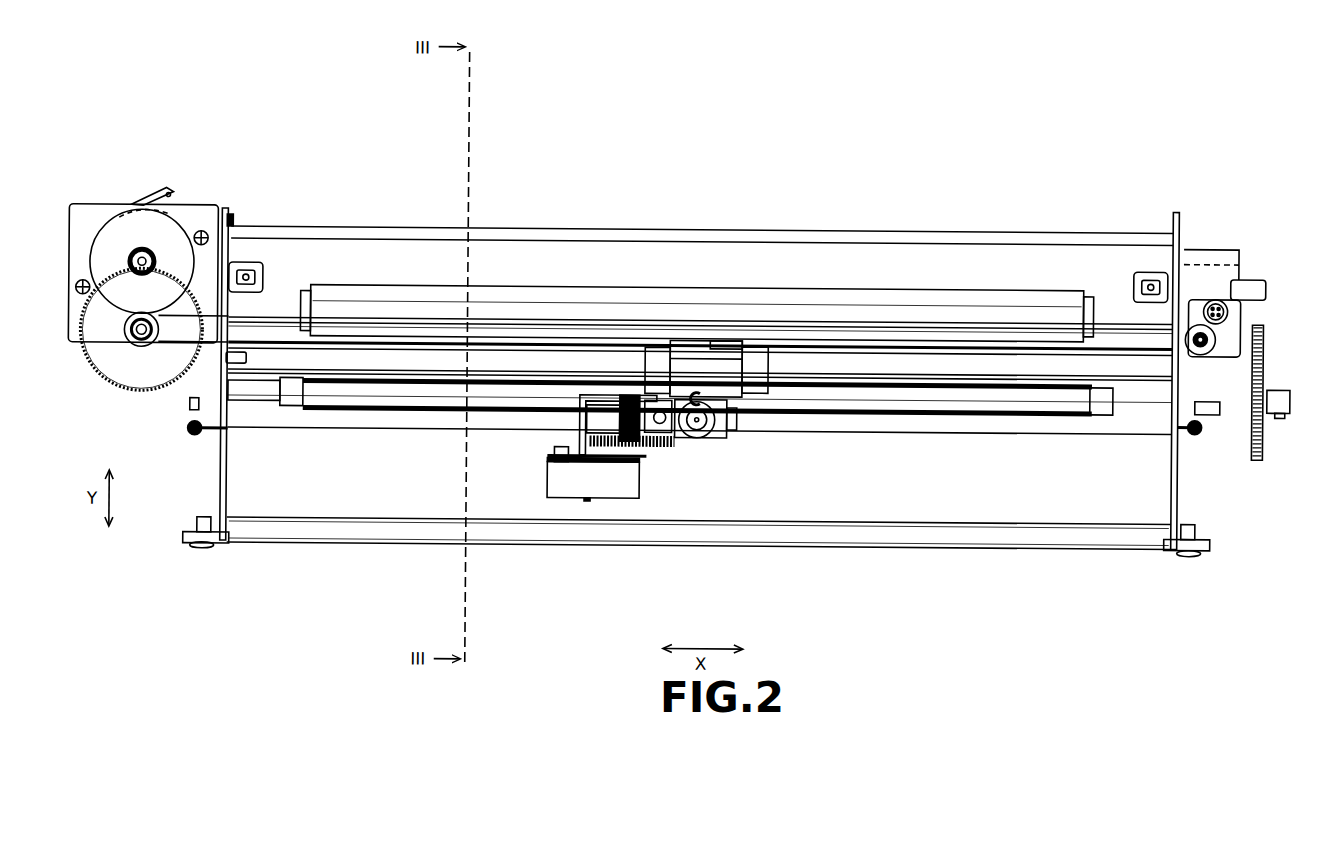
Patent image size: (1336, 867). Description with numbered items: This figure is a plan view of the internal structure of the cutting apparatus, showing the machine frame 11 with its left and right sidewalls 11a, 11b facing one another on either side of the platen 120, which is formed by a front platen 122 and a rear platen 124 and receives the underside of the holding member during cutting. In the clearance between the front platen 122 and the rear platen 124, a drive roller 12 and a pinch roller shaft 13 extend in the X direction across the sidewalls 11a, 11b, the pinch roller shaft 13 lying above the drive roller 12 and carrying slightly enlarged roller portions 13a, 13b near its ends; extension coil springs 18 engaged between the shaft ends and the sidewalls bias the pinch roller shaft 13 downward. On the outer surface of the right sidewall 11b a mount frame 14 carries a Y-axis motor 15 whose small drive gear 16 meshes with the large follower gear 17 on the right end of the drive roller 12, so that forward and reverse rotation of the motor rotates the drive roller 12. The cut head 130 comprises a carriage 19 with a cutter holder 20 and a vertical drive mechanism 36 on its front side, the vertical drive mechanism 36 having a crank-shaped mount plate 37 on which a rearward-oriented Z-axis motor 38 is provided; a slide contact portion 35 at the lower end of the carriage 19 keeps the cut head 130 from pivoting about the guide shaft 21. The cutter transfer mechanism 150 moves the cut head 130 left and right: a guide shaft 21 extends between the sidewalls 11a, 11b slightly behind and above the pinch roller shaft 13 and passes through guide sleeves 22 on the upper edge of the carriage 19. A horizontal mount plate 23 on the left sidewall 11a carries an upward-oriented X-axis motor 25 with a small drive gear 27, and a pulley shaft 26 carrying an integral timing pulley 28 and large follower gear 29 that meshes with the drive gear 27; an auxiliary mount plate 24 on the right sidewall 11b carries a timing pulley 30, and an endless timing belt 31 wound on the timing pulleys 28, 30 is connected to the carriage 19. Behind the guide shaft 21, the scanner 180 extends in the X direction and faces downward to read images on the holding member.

The machine frame 11 is at (1105, 545).
The left sidewall 11a is at (222, 487).
The right sidewall 11b is at (1180, 494).
The drive roller 12 is at (1212, 406).
The pinch roller shaft 13 is at (970, 389).
The roller portion 13a is at (292, 400).
The roller portion 13b is at (1100, 403).
The mount frame 14 is at (1259, 350).
The Y-axis motor 15 is at (1210, 258).
The drive gear 16 is at (1262, 310).
The follower gear 17 is at (1257, 457).
The extension coil spring 18 is at (193, 432).
The carriage 19 is at (703, 341).
The cutter holder 20 is at (720, 428).
The guide shaft 21 is at (887, 365).
The guide sleeve 22 is at (658, 345).
The mount plate 23 is at (98, 205).
The auxiliary mount plate 24 is at (1242, 325).
The X-axis motor 25 is at (120, 205).
The pulley shaft 26 is at (130, 330).
The drive gear 27 is at (135, 258).
The timing pulley 28 is at (141, 348).
The follower gear 29 is at (105, 357).
The timing pulley 30 is at (1240, 344).
The timing belt 31 is at (353, 317).
The slide contact portion 35 is at (790, 395).
The vertical drive mechanism 36 is at (645, 475).
The mount plate 37 is at (583, 436).
The Z-axis motor 38 is at (560, 485).
The platen 120 is at (310, 527).
The front platen 122 is at (382, 504).
The rear platen 124 is at (418, 260).
The cut head 130 is at (699, 421).
The cutter transfer mechanism 150 is at (159, 261).
The scanner 180 is at (825, 295).